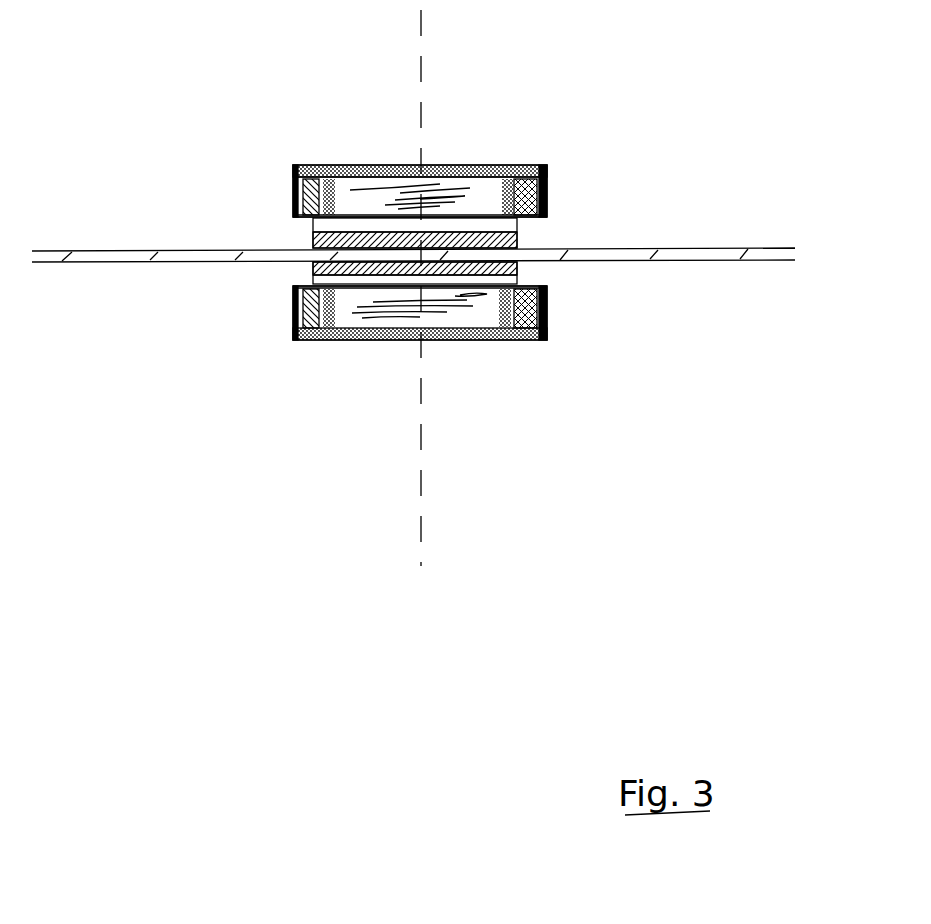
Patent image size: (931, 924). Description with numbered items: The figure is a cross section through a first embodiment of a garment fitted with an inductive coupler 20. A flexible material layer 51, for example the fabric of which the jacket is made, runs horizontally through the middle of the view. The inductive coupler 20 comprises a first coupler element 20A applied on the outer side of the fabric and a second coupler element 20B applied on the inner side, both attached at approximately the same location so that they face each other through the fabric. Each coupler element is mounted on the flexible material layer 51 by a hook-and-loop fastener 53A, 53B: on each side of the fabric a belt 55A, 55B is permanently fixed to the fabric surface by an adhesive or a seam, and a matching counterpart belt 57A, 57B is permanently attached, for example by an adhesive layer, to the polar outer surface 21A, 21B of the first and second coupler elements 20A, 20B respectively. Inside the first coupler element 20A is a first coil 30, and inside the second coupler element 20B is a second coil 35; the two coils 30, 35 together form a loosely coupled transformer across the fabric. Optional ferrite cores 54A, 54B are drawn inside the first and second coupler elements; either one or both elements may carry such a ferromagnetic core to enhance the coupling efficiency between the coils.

The inductive coupler 20 is at (478, 72).
The first coupler element 20A is at (557, 170).
The second coupler element 20B is at (550, 327).
The polar outer surface 21A is at (530, 227).
The polar outer surface 21B is at (535, 281).
The first coil 30 is at (294, 187).
The second coil 35 is at (315, 338).
The flexible material layer 51 is at (766, 262).
The hook-and-loop fastener 53A is at (523, 237).
The hook-and-loop fastener 53B is at (520, 265).
The ferrite core 54A is at (373, 190).
The ferrite core 54B is at (460, 312).
The belt 55A is at (313, 243).
The belt 55B is at (310, 270).
The counterpart belt 57A is at (295, 218).
The counterpart belt 57B is at (310, 281).